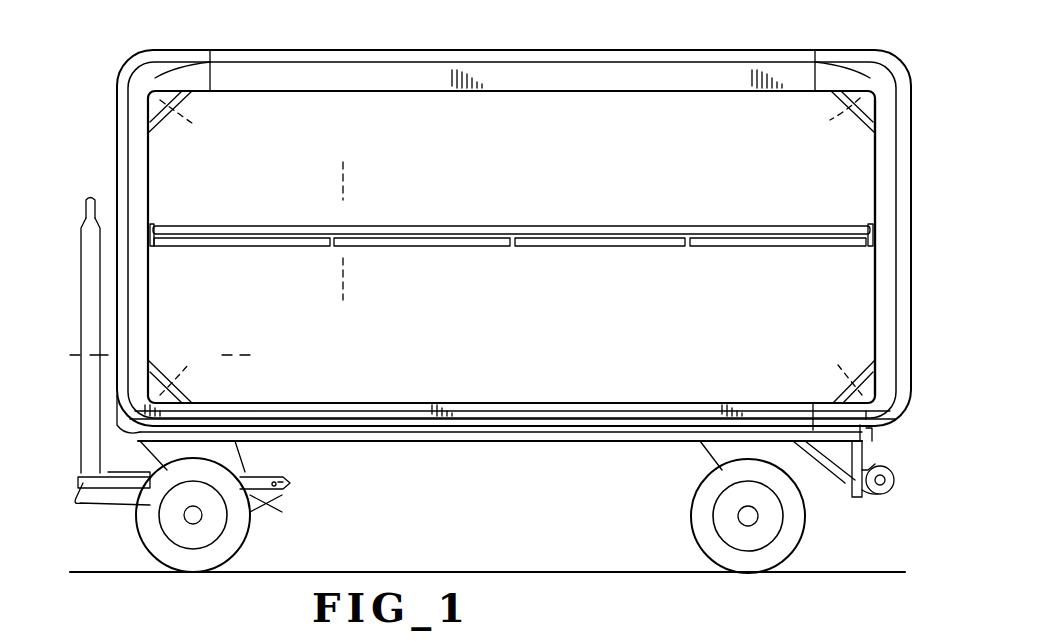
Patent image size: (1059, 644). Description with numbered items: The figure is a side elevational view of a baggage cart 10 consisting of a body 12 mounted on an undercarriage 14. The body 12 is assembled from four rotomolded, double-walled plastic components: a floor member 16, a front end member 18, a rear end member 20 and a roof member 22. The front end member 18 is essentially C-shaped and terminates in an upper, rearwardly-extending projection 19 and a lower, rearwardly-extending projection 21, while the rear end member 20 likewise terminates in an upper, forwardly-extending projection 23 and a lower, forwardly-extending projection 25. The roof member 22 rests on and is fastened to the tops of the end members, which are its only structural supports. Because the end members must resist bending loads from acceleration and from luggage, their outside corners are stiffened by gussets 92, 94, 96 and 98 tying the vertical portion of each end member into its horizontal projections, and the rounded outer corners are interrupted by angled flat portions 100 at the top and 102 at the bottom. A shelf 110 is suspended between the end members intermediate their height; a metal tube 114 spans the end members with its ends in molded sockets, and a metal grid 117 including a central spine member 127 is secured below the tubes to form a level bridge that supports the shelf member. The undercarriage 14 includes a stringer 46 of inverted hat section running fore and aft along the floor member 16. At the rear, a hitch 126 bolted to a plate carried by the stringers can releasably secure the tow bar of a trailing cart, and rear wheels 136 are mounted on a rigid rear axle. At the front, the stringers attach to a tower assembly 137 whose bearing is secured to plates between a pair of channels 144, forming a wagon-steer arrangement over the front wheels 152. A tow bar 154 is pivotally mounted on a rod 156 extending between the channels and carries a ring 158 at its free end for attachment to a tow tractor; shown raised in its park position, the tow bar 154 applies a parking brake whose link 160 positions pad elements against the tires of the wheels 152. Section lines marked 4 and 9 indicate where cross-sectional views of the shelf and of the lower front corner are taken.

The baggage cart 10 is at (116, 72).
The body 12 is at (425, 48).
The undercarriage 14 is at (414, 444).
The floor member 16 is at (447, 402).
The front end member 18 is at (150, 178).
The upper rearwardly-extending projection 19 is at (178, 52).
The rear end member 20 is at (873, 182).
The lower rearwardly-extending projection 21 is at (152, 425).
The roof member 22 is at (516, 90).
The upper forwardly-extending projection 23 is at (866, 58).
The lower forwardly-extending projection 25 is at (832, 410).
The stringer 46 is at (568, 444).
The gusset 92 is at (186, 100).
The gusset 94 is at (175, 392).
The gusset 96 is at (858, 120).
The gusset 98 is at (862, 368).
The angled flat portion 100 is at (178, 124).
The angled flat portion 102 is at (170, 385).
The shelf 110 is at (240, 225).
The metal tube 114 is at (440, 224).
The metal grid 117 is at (535, 247).
The central spine member 127 is at (787, 248).
The hitch 126 is at (870, 497).
The wheel 136 is at (690, 520).
The tower assembly 137 is at (230, 447).
The channel 144 is at (268, 482).
The wheel 152 is at (240, 542).
The tow bar 154 is at (82, 292).
The rod 156 is at (76, 490).
The ring 158 is at (88, 200).
The link 160 is at (282, 500).
The section line 4 is at (346, 176).
The section line 9 is at (63, 355).